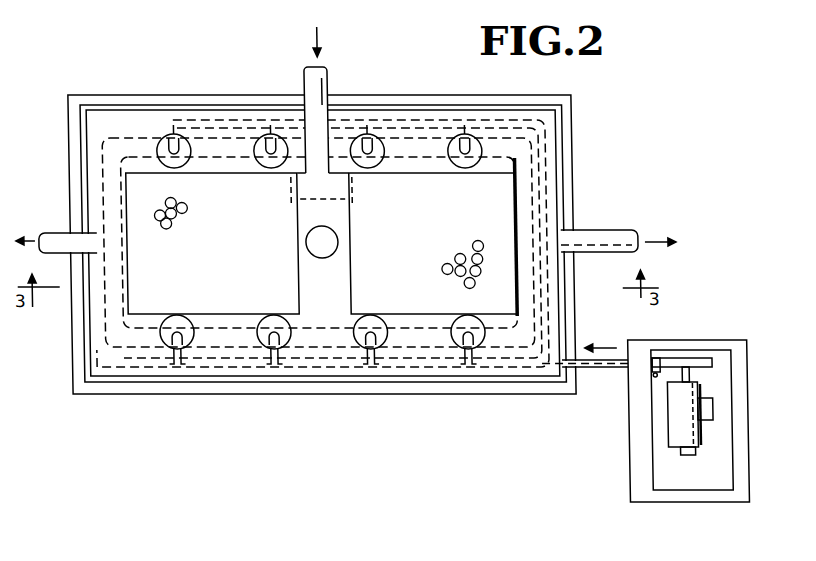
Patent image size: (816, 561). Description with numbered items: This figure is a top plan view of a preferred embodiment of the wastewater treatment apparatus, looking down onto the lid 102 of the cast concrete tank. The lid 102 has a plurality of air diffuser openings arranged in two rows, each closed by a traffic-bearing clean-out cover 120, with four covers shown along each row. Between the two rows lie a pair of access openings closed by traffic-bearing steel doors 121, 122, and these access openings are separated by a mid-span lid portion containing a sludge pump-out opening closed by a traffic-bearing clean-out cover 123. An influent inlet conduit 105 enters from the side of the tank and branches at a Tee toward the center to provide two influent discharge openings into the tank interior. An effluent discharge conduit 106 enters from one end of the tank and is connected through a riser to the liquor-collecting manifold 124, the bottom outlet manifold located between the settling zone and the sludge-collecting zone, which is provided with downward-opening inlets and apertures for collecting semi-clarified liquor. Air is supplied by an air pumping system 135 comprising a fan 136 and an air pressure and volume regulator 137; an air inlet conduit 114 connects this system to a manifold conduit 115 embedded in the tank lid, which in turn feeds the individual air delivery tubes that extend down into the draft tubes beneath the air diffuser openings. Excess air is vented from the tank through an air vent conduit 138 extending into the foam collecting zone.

The lid 102 is at (69, 376).
The influent inlet conduit 105 is at (330, 87).
The effluent discharge conduit 106 is at (572, 253).
The air inlet conduit 114 is at (580, 350).
The manifold conduit 115 is at (544, 188).
The clean-out cover 120 is at (263, 165).
The steel door 121 is at (251, 228).
The steel door 122 is at (421, 218).
The clean-out cover 123 is at (338, 242).
The liquor-collecting manifold 124 is at (126, 353).
The air pumping system 135 is at (675, 338).
The fan 136 is at (666, 372).
The air pressure and volume regulator 137 is at (670, 430).
The air vent conduit 138 is at (51, 232).